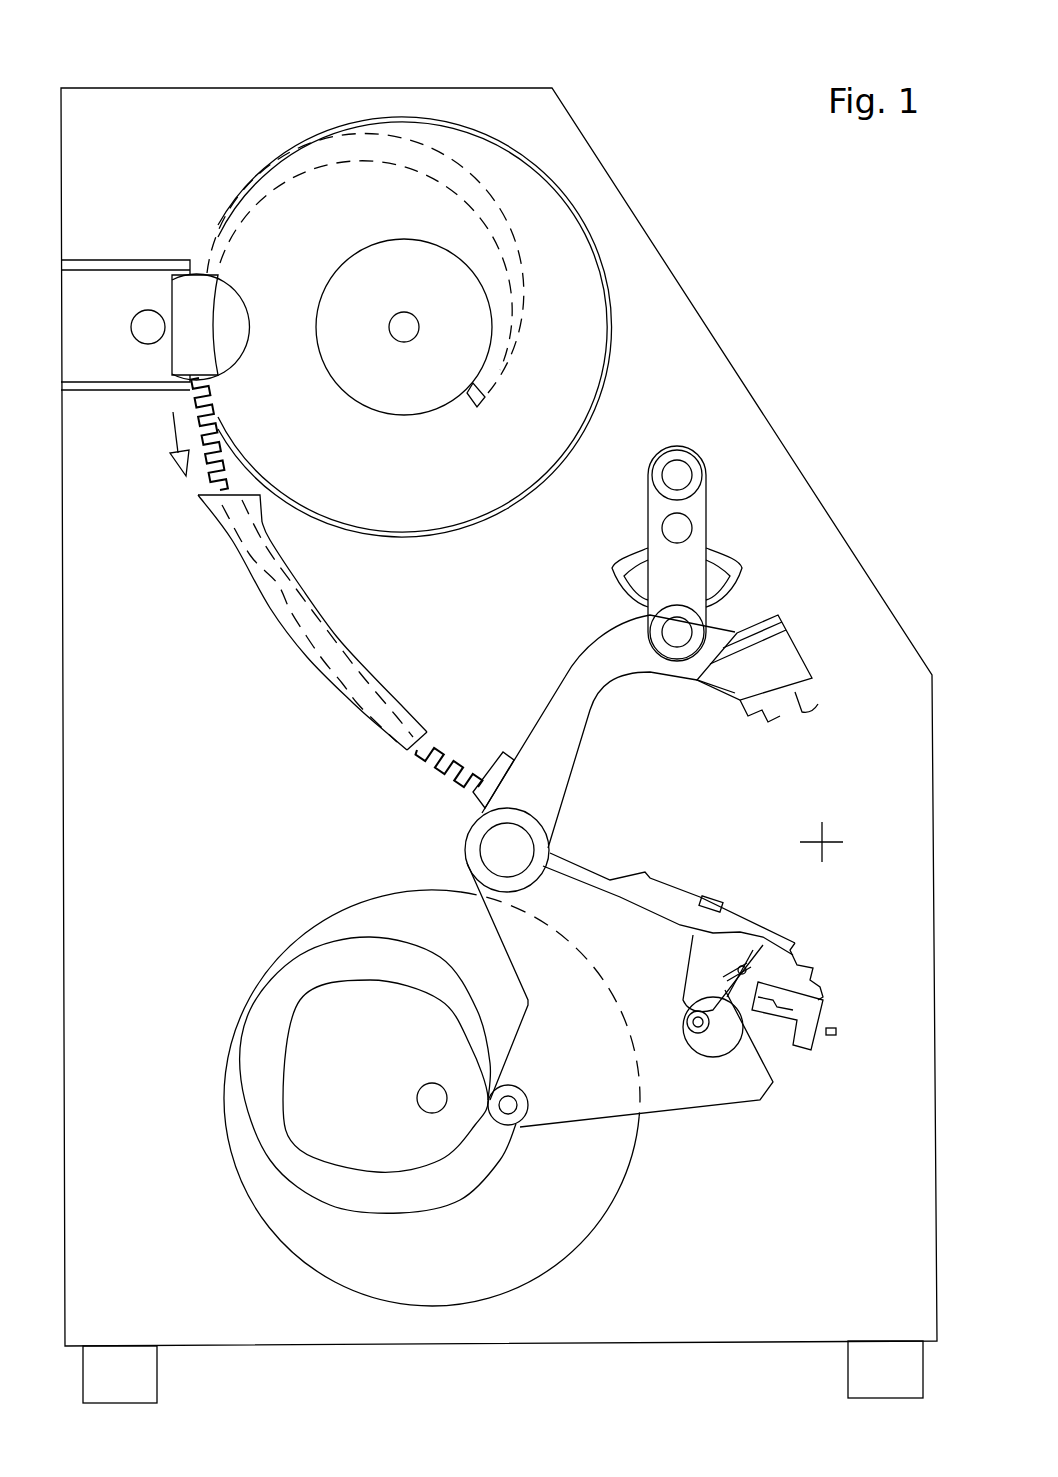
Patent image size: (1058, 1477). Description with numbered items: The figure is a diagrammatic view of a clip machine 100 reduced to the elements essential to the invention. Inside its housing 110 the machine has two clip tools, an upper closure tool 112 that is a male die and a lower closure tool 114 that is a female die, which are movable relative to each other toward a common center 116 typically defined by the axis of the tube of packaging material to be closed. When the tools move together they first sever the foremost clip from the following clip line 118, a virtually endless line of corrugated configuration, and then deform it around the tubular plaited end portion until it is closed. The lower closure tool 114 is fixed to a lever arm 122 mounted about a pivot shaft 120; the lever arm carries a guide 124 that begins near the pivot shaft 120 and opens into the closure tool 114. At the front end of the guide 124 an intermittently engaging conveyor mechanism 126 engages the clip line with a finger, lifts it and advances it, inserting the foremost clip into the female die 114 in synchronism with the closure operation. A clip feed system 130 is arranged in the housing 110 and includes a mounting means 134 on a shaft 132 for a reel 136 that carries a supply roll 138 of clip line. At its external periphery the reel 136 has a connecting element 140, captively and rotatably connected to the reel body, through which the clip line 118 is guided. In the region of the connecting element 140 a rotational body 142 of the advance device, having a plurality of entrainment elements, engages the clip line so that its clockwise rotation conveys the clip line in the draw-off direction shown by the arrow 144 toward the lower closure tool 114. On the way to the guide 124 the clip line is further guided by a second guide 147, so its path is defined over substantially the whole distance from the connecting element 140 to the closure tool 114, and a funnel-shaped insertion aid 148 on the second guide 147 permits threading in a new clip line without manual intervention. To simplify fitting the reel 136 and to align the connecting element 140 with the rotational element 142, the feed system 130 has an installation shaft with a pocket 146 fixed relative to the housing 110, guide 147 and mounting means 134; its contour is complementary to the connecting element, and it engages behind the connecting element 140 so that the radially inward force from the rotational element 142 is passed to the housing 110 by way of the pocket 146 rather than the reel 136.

The clip machine 100 is at (916, 437).
The housing 110 is at (707, 328).
The upper closure tool 112 is at (810, 715).
The lower closure tool 114 is at (795, 977).
The common center 116 is at (822, 842).
The clip line 118 is at (462, 755).
The pivot shaft 120 is at (503, 857).
The lever arm 122 is at (660, 1090).
The guide 124 is at (573, 847).
The conveyor mechanism 126 is at (727, 987).
The clip feed system 130 is at (664, 183).
The shaft 132 is at (400, 335).
The mounting means 134 is at (410, 415).
The reel 136 is at (455, 536).
The supply roll 138 is at (530, 330).
The connecting element 140 is at (205, 297).
The rotational body 142 is at (127, 295).
The arrow 144 is at (173, 428).
The pocket 146 is at (145, 262).
The second guide 147 is at (307, 657).
The insertion aid 148 is at (213, 507).